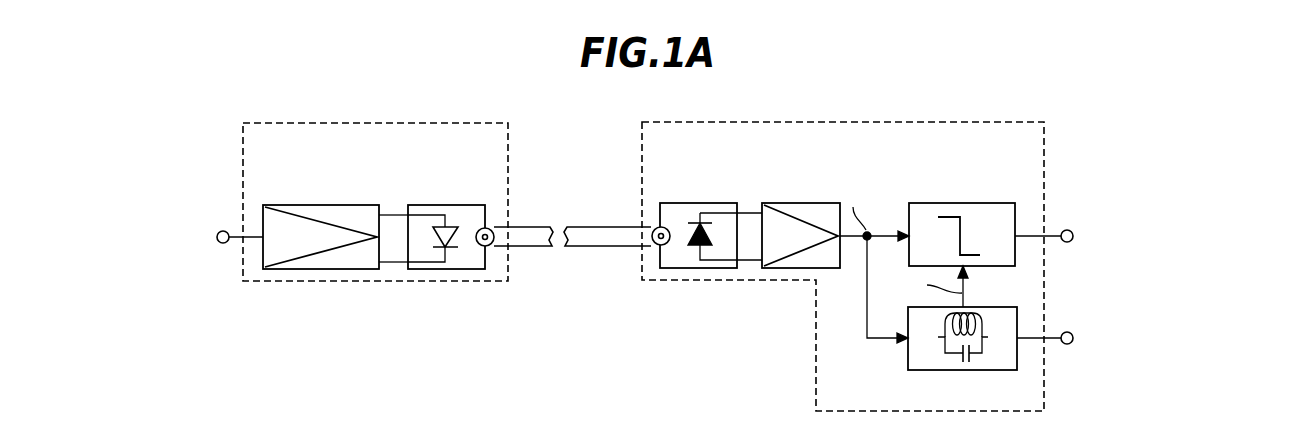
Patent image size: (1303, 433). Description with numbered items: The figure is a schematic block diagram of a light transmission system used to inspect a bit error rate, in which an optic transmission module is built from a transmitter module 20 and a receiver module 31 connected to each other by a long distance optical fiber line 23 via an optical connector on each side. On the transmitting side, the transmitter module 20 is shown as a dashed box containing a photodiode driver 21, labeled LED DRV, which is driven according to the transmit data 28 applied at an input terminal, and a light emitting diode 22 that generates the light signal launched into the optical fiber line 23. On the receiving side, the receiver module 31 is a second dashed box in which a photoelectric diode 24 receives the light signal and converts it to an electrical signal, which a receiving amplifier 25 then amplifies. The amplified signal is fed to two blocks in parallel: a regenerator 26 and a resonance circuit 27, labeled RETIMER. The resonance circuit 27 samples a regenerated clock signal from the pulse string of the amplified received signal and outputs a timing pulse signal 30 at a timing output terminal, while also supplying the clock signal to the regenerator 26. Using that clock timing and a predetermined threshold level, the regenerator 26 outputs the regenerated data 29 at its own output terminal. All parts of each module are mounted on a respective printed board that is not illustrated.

The transmitter module 20 is at (385, 122).
The photodiode driver 21 is at (378, 205).
The light emitting diode 22 is at (470, 205).
The optical fiber line 23 is at (612, 227).
The photoelectric diode 24 is at (722, 203).
The receiving amplifier 25 is at (832, 203).
The regenerator 26 is at (1018, 210).
The resonance circuit 27 is at (908, 353).
The transmit data 28 is at (222, 231).
The regenerated data 29 is at (1069, 242).
The timing pulse signal 30 is at (1069, 344).
The receiver module 31 is at (727, 122).